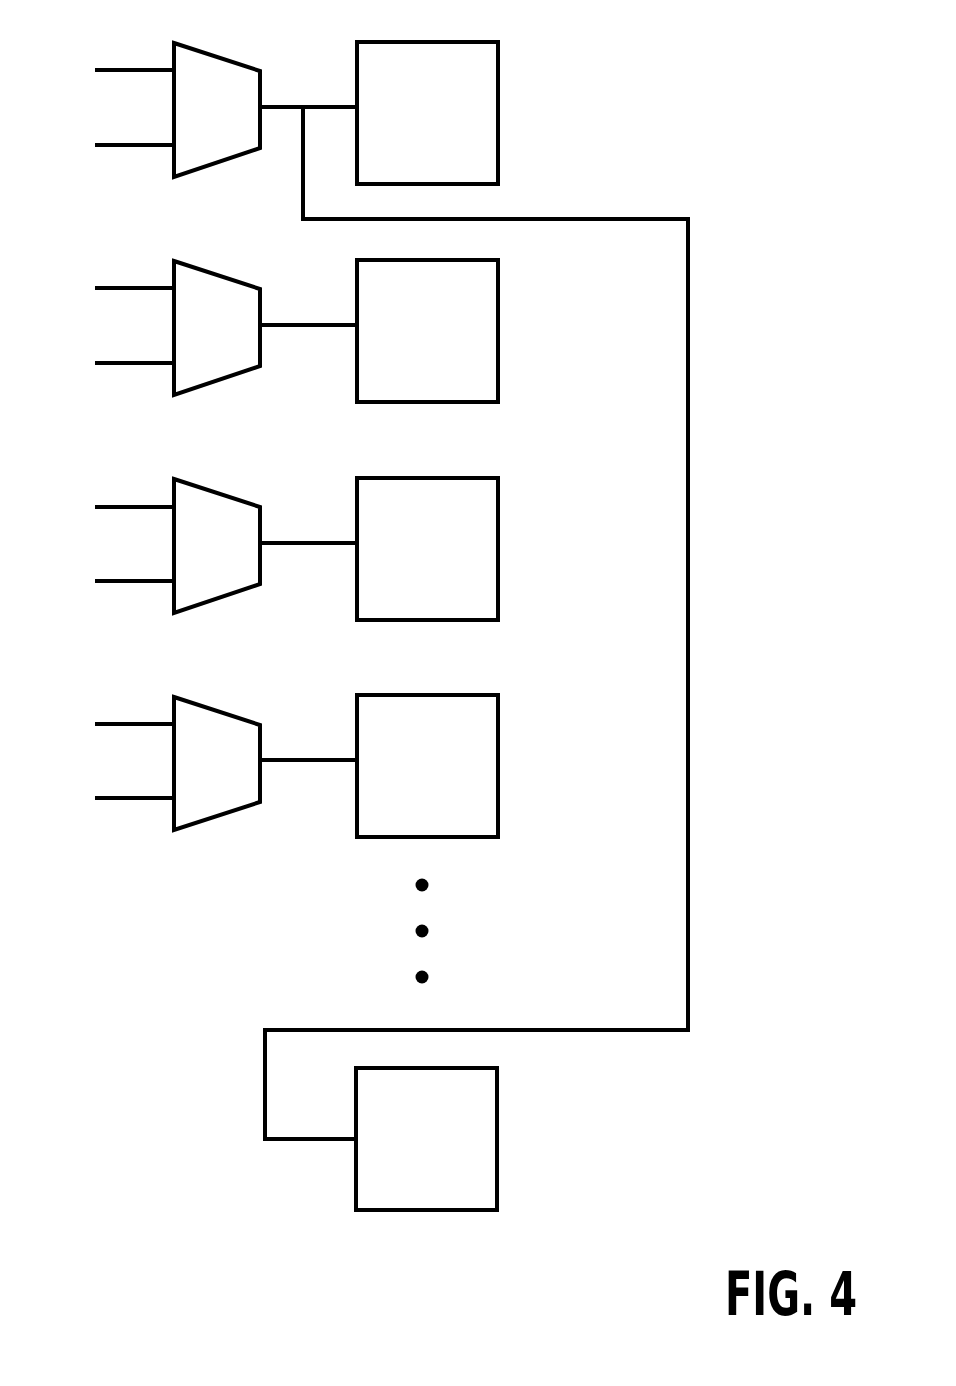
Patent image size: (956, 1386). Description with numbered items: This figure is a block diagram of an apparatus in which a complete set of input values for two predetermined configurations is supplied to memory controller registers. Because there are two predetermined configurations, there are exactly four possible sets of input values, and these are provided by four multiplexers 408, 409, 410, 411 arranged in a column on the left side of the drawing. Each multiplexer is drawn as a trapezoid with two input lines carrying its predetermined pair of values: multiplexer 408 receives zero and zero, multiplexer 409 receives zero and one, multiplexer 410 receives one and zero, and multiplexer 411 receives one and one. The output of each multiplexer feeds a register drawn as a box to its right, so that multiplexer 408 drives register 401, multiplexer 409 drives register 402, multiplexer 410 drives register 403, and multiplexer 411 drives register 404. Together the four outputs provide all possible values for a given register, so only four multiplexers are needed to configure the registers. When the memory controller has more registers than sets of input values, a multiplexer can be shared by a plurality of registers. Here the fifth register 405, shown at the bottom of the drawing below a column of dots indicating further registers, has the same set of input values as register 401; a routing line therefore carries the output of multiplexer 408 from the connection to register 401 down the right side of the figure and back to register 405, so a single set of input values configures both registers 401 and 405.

The register 401 is at (485, 42).
The register 402 is at (487, 260).
The register 403 is at (485, 478).
The register 404 is at (485, 695).
The fifth register 405 is at (485, 1068).
The multiplexer 408 is at (213, 72).
The multiplexer 409 is at (213, 290).
The multiplexer 410 is at (213, 508).
The multiplexer 411 is at (213, 706).